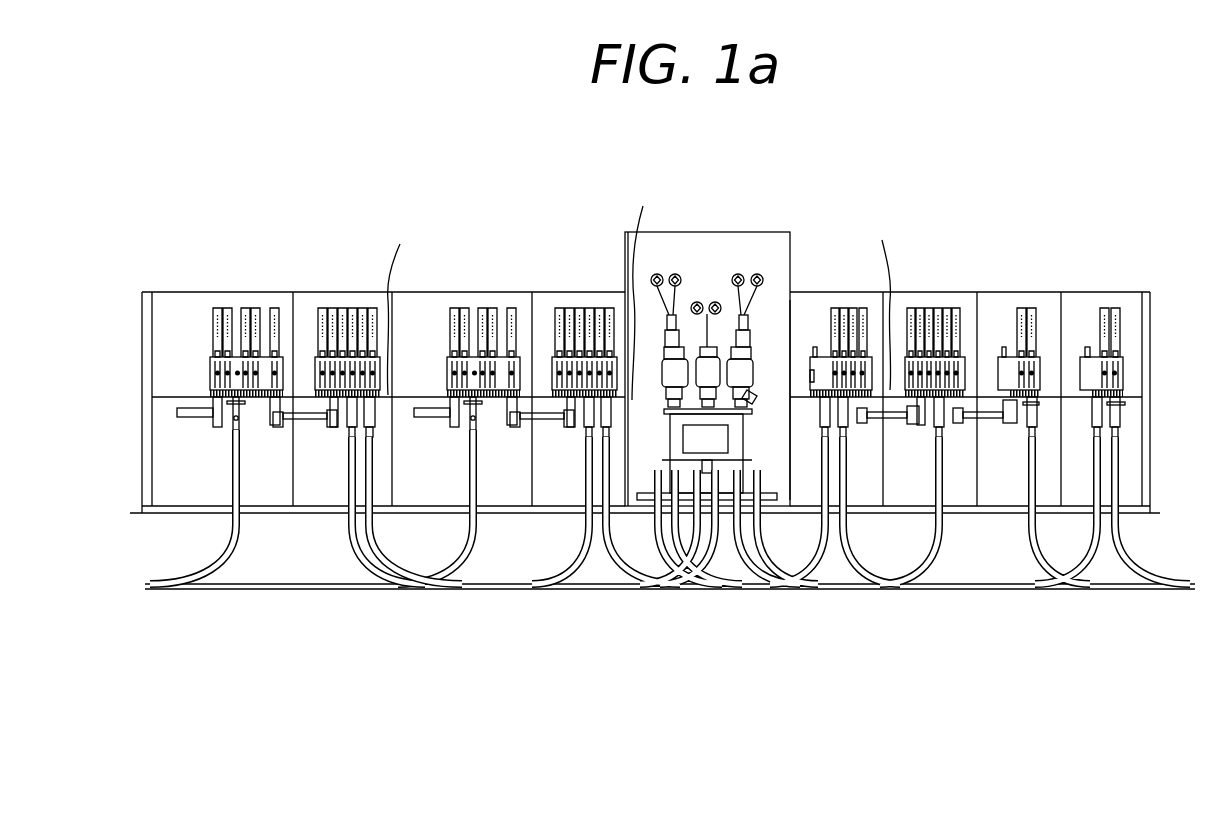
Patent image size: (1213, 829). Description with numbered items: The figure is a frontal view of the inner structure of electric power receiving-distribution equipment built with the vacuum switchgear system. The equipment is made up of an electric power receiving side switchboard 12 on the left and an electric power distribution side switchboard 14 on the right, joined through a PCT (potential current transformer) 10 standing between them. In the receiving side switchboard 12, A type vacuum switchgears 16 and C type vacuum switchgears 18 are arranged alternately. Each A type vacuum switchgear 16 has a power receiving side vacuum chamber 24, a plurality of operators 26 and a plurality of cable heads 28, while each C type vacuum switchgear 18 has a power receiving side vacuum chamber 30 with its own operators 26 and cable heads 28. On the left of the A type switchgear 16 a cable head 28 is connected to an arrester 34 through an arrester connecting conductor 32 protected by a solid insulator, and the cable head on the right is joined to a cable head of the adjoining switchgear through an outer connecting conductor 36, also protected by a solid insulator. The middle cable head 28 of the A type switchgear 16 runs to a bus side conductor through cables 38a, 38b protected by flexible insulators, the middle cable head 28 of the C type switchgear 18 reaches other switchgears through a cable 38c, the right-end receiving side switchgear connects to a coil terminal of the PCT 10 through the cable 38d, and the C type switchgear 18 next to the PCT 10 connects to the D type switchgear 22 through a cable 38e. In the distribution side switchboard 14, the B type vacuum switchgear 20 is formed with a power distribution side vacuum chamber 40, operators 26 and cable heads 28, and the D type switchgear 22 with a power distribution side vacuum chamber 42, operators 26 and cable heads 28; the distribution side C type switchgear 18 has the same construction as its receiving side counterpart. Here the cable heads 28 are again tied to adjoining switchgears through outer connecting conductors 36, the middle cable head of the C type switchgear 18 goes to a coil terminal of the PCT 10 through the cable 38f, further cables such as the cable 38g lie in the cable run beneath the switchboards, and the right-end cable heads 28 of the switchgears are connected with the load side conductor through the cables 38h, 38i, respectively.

The PCT (potential current transformer) 10 is at (716, 231).
The electric power receiving side switchboard 12 is at (321, 121).
The electric power distribution side switchboard 14 is at (904, 120).
The A type vacuum switchgear 16 is at (211, 248).
The C type vacuum switchgear 18 is at (346, 248).
The B type vacuum switchgear 20 is at (1021, 248).
The D type vacuum switchgear 22 is at (834, 248).
The power receiving side vacuum chamber 24 is at (210, 368).
The operators 26 is at (215, 320).
The cable heads 28 is at (210, 393).
The power receiving side vacuum chamber 30 is at (643, 292).
The arrester connecting conductor 32 is at (215, 428).
The arrester 34 is at (178, 412).
The outer connecting conductor 36 is at (305, 422).
The cable 38a is at (232, 437).
The cable 38b is at (320, 590).
The cable 38c is at (345, 530).
The cable 38d is at (378, 535).
The cable 38e is at (605, 548).
The cable 38f is at (850, 590).
The hose 38g is at (990, 590).
The cable 38h is at (1122, 590).
The cable 38i is at (1135, 553).
The power distribution side vacuum chamber 40 is at (990, 380).
The power distribution side vacuum chamber 42 is at (810, 376).